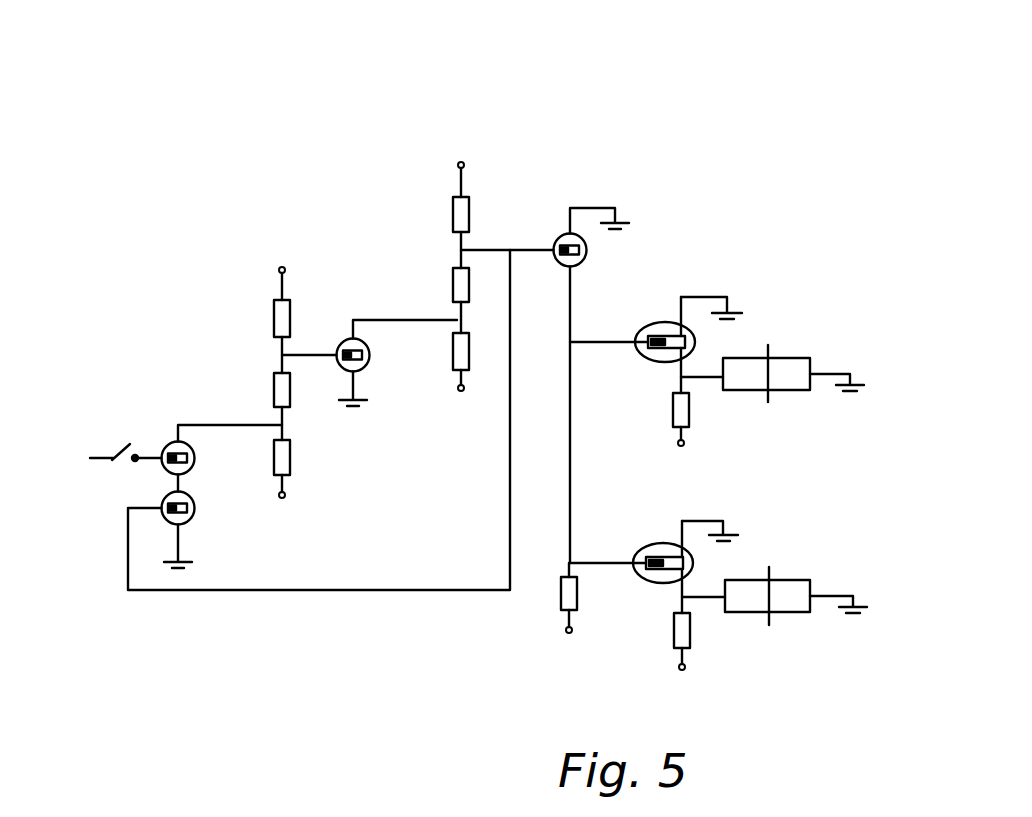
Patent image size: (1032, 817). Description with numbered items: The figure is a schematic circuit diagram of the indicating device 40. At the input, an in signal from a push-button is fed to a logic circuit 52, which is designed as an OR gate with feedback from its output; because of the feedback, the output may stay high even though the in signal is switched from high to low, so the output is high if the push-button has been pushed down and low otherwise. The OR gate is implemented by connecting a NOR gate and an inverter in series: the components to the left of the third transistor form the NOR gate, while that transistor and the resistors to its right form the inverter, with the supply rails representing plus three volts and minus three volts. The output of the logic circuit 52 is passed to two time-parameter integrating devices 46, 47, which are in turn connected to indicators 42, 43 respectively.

The indicating device 40 is at (453, 368).
The indicator 42 is at (785, 378).
The indicator 43 is at (785, 600).
The time-parameter integrating device 46 is at (665, 352).
The time-parameter integrating device 47 is at (665, 570).
The logic circuit 52 is at (244, 606).